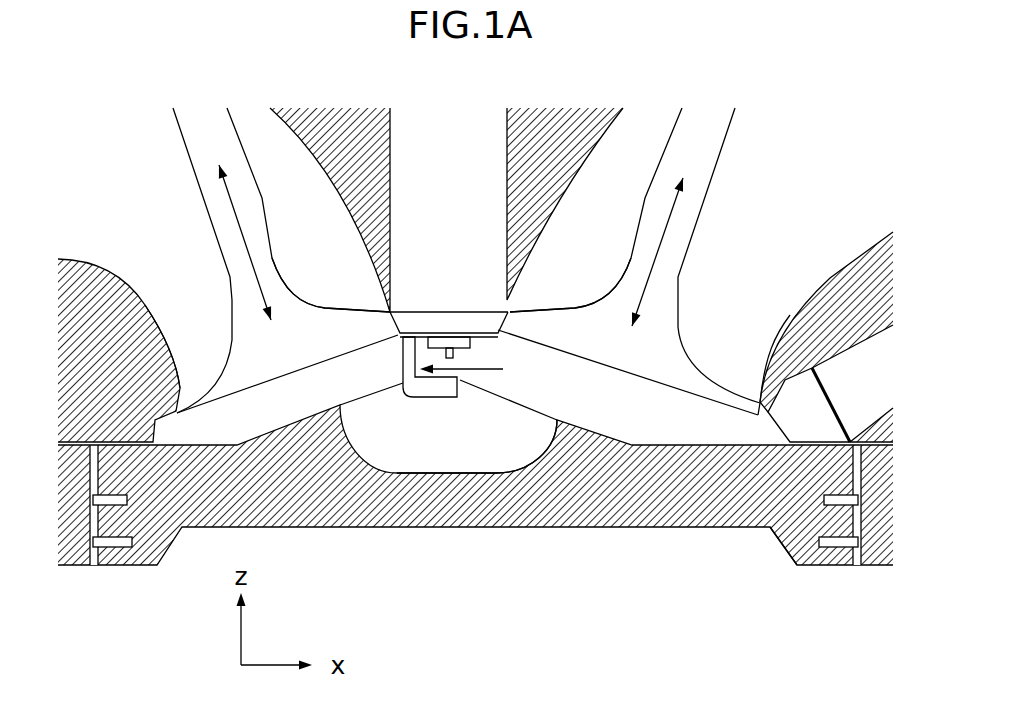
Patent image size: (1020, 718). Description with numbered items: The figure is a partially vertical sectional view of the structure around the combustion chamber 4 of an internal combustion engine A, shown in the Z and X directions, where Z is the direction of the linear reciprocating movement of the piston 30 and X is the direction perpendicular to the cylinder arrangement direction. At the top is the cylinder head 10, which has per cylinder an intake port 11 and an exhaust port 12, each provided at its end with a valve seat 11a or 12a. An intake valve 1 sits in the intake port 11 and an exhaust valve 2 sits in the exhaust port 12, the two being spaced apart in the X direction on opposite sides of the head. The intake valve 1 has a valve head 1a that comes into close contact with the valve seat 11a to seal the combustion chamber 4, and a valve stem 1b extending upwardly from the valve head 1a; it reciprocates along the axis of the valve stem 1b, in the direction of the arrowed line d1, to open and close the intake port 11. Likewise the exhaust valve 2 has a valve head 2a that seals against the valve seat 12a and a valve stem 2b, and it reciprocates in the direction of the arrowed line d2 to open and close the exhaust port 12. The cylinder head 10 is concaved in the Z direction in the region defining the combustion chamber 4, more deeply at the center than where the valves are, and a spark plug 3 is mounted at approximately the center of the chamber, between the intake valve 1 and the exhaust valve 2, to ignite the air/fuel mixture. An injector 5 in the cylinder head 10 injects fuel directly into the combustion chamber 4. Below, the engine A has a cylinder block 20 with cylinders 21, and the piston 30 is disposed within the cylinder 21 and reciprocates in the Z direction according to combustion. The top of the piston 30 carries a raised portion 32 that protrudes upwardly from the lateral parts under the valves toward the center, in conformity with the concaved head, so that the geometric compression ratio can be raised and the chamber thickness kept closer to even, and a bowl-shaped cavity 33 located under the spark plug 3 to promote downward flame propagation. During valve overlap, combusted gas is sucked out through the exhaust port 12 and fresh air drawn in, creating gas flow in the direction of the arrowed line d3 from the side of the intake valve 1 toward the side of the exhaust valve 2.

The intake valve 1 is at (644, 265).
The valve head 1a is at (642, 368).
The valve stem 1b is at (692, 214).
The exhaust valve 2 is at (271, 260).
The valve head 2a is at (290, 372).
The valve stem 2b is at (242, 177).
The spark plug 3 is at (443, 115).
The combustion chamber 4 is at (513, 386).
The injector 5 is at (823, 403).
The cylinder head 10 is at (343, 110).
The intake port 11 is at (676, 248).
The valve seat 11a is at (517, 303).
The exhaust port 12 is at (230, 244).
The valve seat 12a is at (385, 310).
The cylinder block 20 is at (74, 556).
The cylinder 21 is at (800, 558).
The piston 30 is at (615, 528).
The raised portion 32 is at (560, 420).
The cavity 33 is at (452, 475).
The arrowed line d1 is at (670, 222).
The arrowed line d2 is at (236, 220).
The arrowed line d3 is at (478, 367).
The internal combustion engine A is at (546, 604).